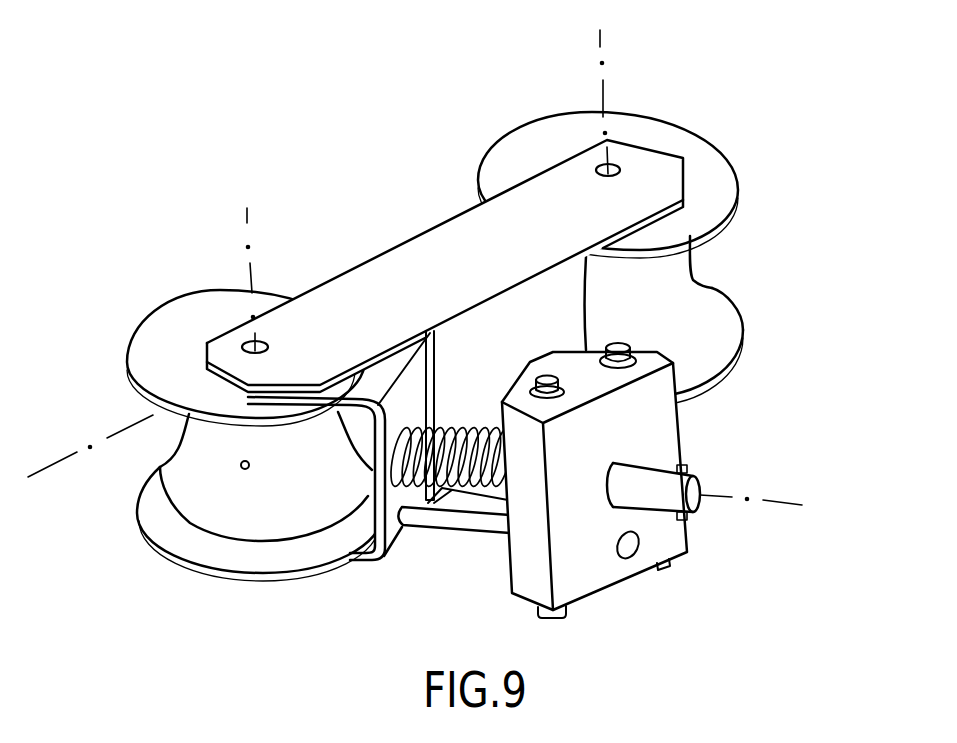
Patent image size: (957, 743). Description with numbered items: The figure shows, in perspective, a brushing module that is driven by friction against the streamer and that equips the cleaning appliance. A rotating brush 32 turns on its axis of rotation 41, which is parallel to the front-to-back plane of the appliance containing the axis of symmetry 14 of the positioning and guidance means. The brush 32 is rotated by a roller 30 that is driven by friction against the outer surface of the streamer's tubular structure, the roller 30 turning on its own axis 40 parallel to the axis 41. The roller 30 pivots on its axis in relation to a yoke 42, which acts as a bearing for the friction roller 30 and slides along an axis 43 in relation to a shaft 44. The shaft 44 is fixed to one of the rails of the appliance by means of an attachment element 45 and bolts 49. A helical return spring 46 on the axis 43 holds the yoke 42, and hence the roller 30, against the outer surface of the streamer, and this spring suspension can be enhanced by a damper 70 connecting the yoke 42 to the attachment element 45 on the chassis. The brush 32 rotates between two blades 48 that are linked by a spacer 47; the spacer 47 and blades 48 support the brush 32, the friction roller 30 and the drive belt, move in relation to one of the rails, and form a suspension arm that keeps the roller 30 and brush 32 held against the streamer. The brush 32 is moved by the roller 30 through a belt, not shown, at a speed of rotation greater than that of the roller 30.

The axis of symmetry 14 is at (50, 463).
The roller 30 is at (257, 557).
The rotating brush 32 is at (721, 163).
The axis 40 is at (247, 213).
The axis of rotation 41 is at (600, 30).
The yoke 42 is at (393, 530).
The axis 43 is at (782, 500).
The shaft 44 is at (652, 477).
The attachment element 45 is at (598, 577).
The helical return spring 46 is at (463, 427).
The spacer 47 is at (521, 339).
The blades 48 is at (470, 281).
The bolts 49 is at (545, 377).
The damper 70 is at (465, 525).